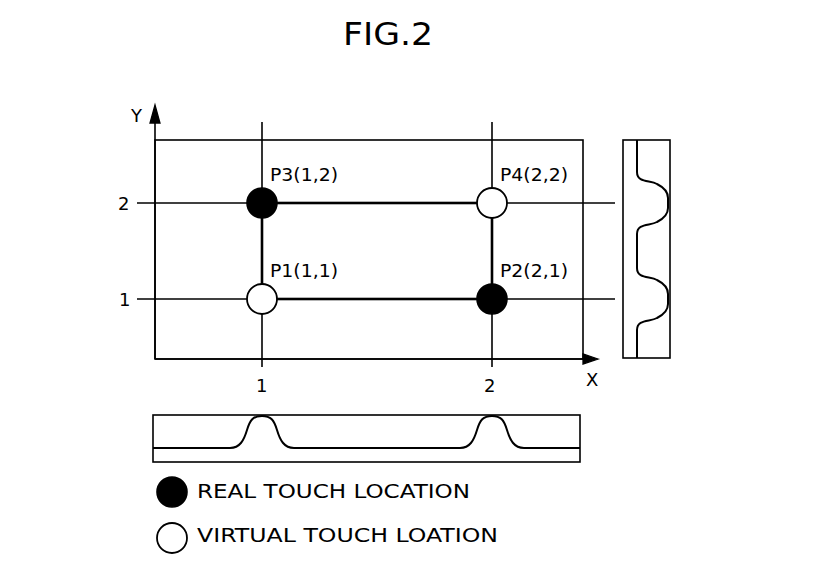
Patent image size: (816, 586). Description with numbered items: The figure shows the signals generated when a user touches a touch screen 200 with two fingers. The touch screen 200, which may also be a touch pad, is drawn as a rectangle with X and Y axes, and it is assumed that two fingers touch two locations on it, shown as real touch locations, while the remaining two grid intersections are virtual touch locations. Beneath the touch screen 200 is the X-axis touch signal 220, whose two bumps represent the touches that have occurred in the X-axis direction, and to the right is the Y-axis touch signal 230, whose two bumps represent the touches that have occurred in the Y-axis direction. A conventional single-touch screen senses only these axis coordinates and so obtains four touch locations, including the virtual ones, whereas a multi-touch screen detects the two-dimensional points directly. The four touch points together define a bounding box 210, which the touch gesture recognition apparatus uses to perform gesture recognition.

The touch screen 200 is at (557, 140).
The bounding box 210 is at (262, 252).
The X-axis touch signal 220 is at (580, 462).
The Y-axis touch signal 230 is at (672, 358).